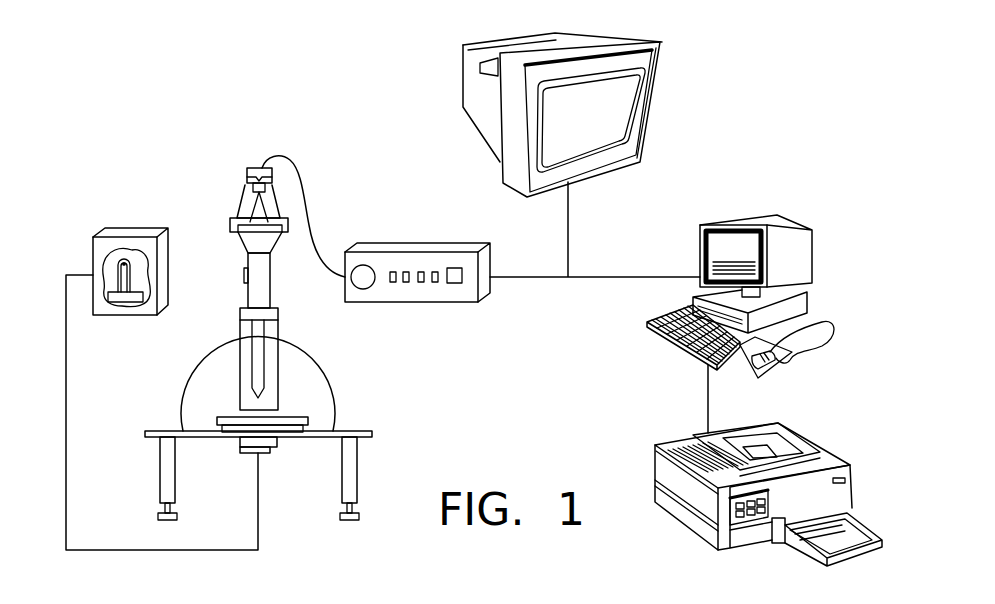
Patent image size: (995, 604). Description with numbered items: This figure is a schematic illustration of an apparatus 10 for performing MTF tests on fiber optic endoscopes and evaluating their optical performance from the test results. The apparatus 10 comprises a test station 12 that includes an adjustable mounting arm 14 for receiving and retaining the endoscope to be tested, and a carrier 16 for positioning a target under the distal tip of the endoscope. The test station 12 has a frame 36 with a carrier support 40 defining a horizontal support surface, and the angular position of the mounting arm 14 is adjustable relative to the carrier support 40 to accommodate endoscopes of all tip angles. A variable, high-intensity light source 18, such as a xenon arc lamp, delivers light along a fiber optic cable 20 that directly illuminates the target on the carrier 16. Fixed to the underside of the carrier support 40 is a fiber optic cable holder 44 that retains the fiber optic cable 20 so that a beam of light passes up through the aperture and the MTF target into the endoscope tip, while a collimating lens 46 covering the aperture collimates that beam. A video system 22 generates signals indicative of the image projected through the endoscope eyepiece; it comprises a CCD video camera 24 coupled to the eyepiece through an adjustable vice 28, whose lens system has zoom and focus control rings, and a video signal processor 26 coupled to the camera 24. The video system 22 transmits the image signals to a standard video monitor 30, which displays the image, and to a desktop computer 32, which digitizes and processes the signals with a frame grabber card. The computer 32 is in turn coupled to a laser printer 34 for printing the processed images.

The apparatus 10 is at (312, 138).
The test station 12 is at (165, 389).
The adjustable mounting arm 14 is at (270, 333).
The carrier 16 is at (293, 417).
The light source 18 is at (138, 230).
The fiber optic cable 20 is at (147, 552).
The video system 22 is at (417, 235).
The CCD video camera 24 is at (247, 178).
The video signal processor 26 is at (400, 248).
The adjustable vice 28 is at (230, 222).
The video monitor 30 is at (508, 43).
The desktop computer 32 is at (727, 223).
The printer 34 is at (783, 431).
The frame 36 is at (203, 355).
The carrier support 40 is at (157, 430).
The fiber optic cable holder 44 is at (252, 448).
The collimating lens 46 is at (273, 440).